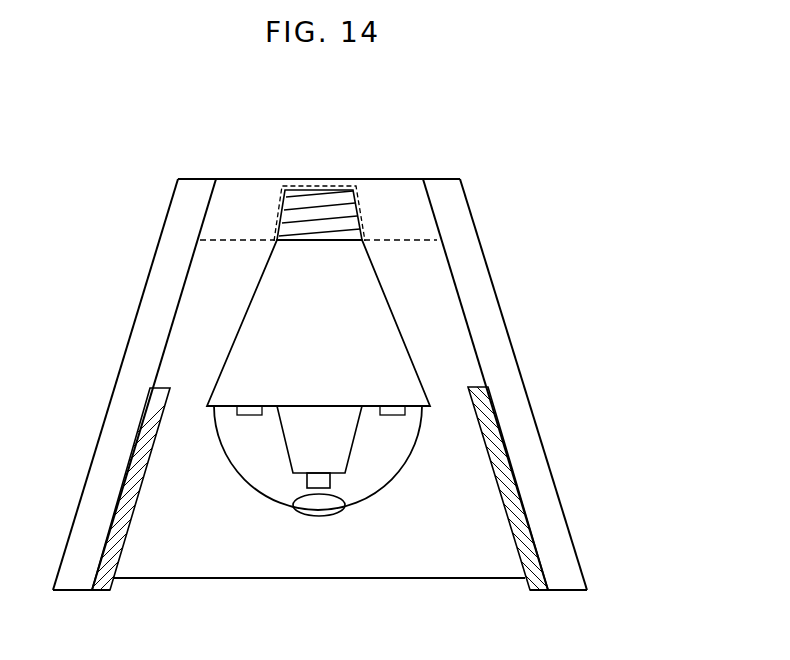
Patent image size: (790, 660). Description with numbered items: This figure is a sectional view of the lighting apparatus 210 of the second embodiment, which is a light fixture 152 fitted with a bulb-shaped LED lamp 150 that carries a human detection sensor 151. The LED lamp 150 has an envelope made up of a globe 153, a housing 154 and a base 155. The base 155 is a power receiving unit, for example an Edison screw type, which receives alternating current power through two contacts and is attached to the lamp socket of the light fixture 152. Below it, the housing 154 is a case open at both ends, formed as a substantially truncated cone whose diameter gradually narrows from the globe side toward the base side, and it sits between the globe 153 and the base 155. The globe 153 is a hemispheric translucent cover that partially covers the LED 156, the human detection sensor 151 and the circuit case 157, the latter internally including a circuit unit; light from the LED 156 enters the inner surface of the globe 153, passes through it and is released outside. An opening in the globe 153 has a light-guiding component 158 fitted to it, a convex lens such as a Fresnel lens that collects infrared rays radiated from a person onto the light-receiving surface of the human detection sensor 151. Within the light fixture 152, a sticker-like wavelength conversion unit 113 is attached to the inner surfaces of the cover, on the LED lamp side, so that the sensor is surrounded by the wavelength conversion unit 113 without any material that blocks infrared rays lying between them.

The lighting apparatus 210 is at (566, 180).
The light fixture 152 is at (510, 378).
The wavelength conversion unit 113 is at (120, 558).
The base 155 is at (298, 215).
The LED lamp 150 is at (313, 393).
The housing 154 is at (230, 373).
The globe 153 is at (237, 455).
The LED 156 is at (247, 413).
The circuit case 157 is at (338, 448).
The human detection sensor 151 is at (307, 481).
The light-guiding component 158 is at (325, 507).